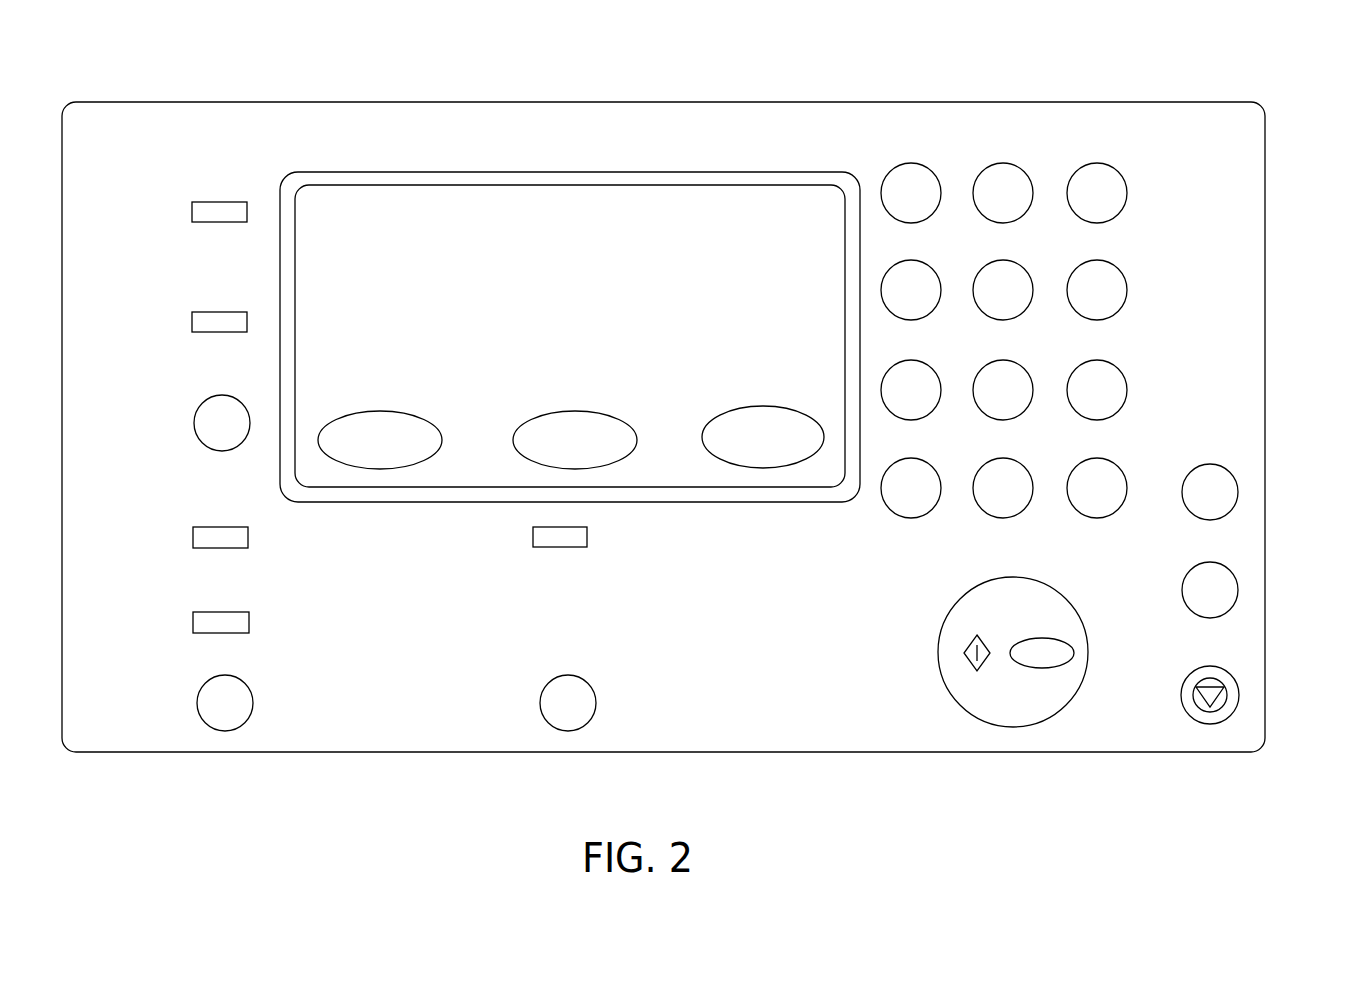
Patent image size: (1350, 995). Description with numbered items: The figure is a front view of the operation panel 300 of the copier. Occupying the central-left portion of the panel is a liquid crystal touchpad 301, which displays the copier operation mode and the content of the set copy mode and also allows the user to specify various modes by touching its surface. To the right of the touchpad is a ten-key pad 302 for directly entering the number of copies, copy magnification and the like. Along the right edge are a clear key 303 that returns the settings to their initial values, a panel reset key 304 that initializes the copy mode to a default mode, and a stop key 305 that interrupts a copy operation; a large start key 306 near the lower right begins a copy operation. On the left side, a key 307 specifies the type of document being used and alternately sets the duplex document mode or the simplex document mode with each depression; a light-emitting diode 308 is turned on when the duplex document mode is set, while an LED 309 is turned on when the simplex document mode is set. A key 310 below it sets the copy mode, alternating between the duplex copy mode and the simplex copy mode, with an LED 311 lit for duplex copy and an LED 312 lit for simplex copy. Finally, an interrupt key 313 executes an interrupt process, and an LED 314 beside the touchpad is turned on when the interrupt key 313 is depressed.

The operation panel 300 is at (744, 98).
The liquid crystal touchpad 301 is at (773, 197).
The ten-key pad 302 is at (1040, 118).
The clear key 303 is at (1238, 492).
The panel reset key 304 is at (1238, 590).
The stop key 305 is at (1239, 695).
The start key 306 is at (1066, 700).
The key 307 is at (195, 422).
The light-emitting diode 308 is at (220, 202).
The LED 309 is at (215, 312).
The key 310 is at (253, 703).
The LED 311 is at (217, 527).
The LED 312 is at (217, 612).
The interrupt key 313 is at (588, 703).
The LED 314 is at (587, 537).